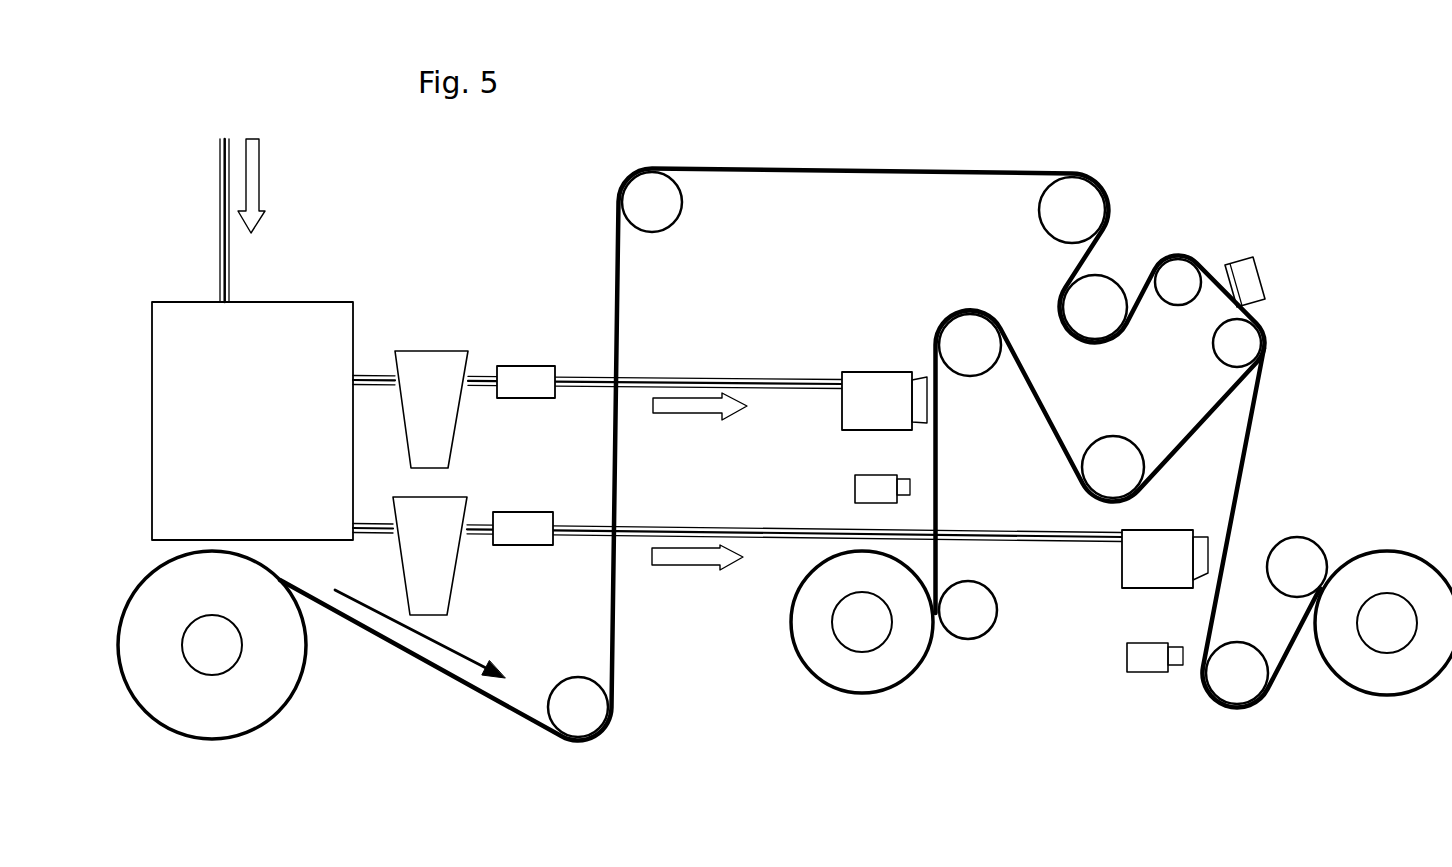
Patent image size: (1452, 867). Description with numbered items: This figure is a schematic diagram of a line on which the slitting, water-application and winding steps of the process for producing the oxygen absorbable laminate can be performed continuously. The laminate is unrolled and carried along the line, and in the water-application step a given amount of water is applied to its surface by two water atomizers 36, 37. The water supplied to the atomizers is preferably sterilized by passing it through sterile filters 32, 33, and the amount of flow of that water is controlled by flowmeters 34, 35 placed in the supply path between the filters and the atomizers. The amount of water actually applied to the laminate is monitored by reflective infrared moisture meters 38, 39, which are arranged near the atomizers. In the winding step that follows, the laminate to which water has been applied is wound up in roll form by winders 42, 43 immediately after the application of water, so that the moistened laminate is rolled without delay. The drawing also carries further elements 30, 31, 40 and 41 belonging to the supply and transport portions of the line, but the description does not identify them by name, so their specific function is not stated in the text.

The raw material supply 30 is at (259, 139).
The mixing tank 31 is at (293, 302).
The sterile filter 32 is at (431, 351).
The sterile filter 33 is at (455, 573).
The flowmeter 34 is at (537, 366).
The flowmeter 35 is at (515, 512).
The water atomizer 36 is at (870, 372).
The water atomizer 37 is at (1121, 568).
The reflective infrared moisture meter 38 is at (855, 492).
The reflective infrared moisture meter 39 is at (1133, 672).
The heater 40 is at (1258, 272).
The substrate supply roll 41 is at (272, 720).
The winder 42 is at (815, 680).
The winder 43 is at (1355, 693).